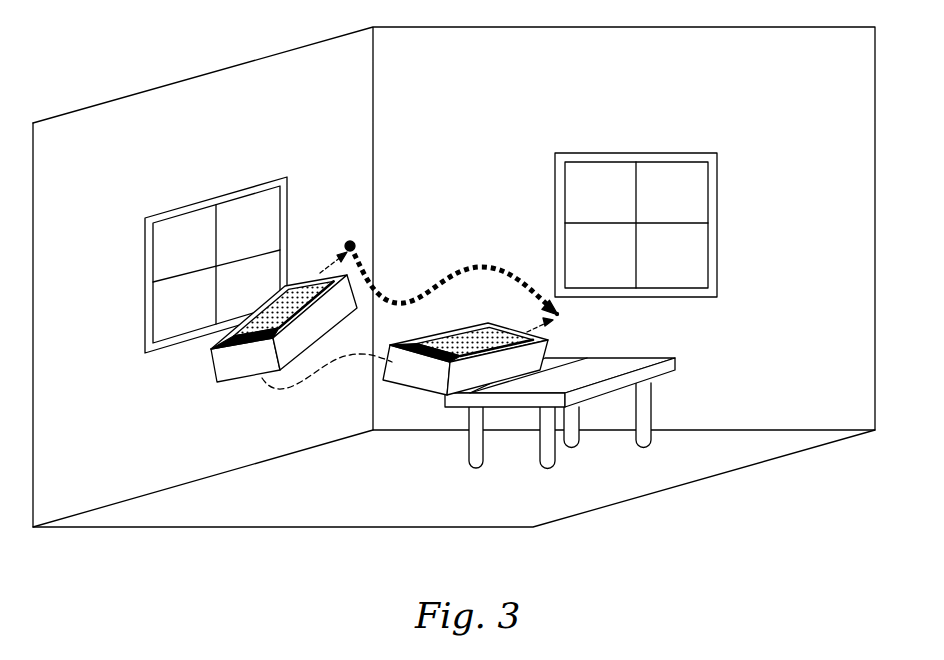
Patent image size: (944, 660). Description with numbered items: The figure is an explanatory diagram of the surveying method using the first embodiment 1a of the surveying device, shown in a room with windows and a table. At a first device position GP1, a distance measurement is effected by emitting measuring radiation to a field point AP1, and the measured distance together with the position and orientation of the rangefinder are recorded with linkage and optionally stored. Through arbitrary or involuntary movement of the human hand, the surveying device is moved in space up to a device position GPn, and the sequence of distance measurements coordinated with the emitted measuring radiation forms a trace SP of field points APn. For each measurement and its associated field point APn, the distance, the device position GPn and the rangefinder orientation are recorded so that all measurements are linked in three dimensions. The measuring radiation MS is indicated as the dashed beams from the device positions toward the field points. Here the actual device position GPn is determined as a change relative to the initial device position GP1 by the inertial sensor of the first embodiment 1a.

The first device position GP1 is at (227, 352).
The device position GPn is at (417, 413).
The field point AP1 is at (418, 206).
The field point APn is at (630, 333).
The measurement signal MS is at (425, 282).
The trace SP is at (454, 272).
The first embodiment 1a is at (243, 401).